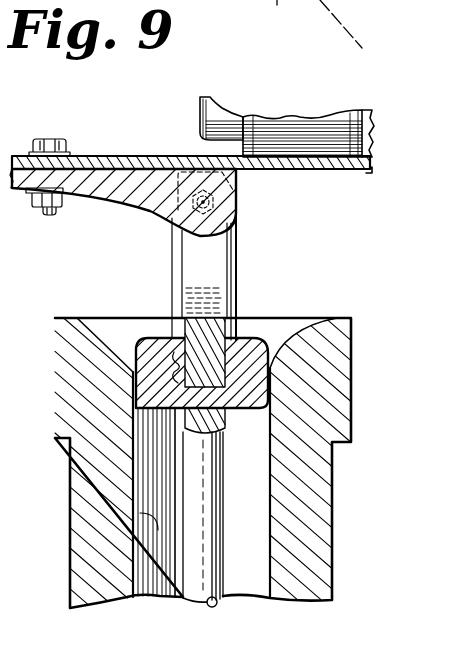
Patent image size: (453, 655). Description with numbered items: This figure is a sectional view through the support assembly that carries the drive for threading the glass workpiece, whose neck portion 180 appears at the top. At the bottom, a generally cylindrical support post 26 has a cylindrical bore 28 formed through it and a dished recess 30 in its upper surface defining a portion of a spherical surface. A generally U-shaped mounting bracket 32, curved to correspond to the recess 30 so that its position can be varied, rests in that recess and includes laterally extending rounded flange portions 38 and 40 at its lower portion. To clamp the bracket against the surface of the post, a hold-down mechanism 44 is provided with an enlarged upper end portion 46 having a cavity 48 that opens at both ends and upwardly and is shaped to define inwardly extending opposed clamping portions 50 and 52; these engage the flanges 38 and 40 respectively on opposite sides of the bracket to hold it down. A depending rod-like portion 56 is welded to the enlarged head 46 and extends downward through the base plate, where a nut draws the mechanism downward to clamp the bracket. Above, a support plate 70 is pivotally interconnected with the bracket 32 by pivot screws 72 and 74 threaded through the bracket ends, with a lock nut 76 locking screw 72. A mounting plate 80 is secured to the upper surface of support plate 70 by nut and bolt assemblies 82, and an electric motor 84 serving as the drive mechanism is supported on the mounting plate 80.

The neck portion 180 is at (311, 24).
The mounting plate 80 is at (130, 157).
The nut and bolt assemblies 82 is at (58, 136).
The electric motor 84 is at (197, 94).
The support plate 70 is at (89, 193).
The pivot screw 72 is at (225, 191).
The pivot screw 74 is at (14, 208).
The lock nut 76 is at (237, 217).
The U-shaped mounting bracket 32 is at (244, 279).
The dished recess 30 is at (82, 335).
The support post 26 is at (316, 528).
The enlarged upper end portion 46 is at (263, 357).
The clamping portion 50 is at (183, 336).
The clamping portion 52 is at (236, 320).
The cavity 48 is at (177, 360).
The rounded flange portion 40 is at (237, 375).
The rounded flange portion 38 is at (156, 502).
The cylindrical bore 28 is at (153, 534).
The hold-down mechanism 44 is at (221, 488).
The rod-like portion 56 is at (209, 607).